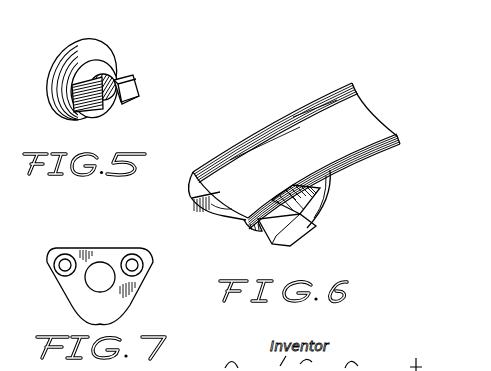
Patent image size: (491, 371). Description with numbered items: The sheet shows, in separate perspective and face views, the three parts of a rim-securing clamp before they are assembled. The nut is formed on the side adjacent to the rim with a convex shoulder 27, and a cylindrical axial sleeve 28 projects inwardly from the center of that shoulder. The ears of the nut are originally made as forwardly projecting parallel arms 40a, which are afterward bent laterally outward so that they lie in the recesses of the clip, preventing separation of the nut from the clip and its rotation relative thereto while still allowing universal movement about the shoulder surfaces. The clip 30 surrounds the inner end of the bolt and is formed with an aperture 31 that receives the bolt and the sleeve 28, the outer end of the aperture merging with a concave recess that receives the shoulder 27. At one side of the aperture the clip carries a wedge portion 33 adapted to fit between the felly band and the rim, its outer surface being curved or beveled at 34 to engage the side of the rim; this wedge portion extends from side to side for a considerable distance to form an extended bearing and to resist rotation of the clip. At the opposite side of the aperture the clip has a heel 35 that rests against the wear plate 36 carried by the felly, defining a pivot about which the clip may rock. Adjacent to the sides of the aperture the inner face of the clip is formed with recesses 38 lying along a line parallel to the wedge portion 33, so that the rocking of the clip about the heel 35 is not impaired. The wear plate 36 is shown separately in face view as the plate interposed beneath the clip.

In FIG. 5, the convex shoulder 27 is at (93, 50).
In FIG. 5, the cylindrical axial sleeve 28 is at (96, 73).
In FIG. 5, the forwardly projecting parallel arms 40a is at (103, 114).
In FIG. 6, the curved or beveled outer surface 34 is at (350, 115).
In FIG. 6, the wedge portion 33 is at (196, 206).
In FIG. 6, the clip 30 is at (220, 217).
In FIG. 6, the recesses 38 is at (317, 192).
In FIG. 6, the aperture 31 is at (312, 212).
In FIG. 6, the heel 35 is at (297, 233).
In FIG. 7, the wear plate 36 is at (100, 286).